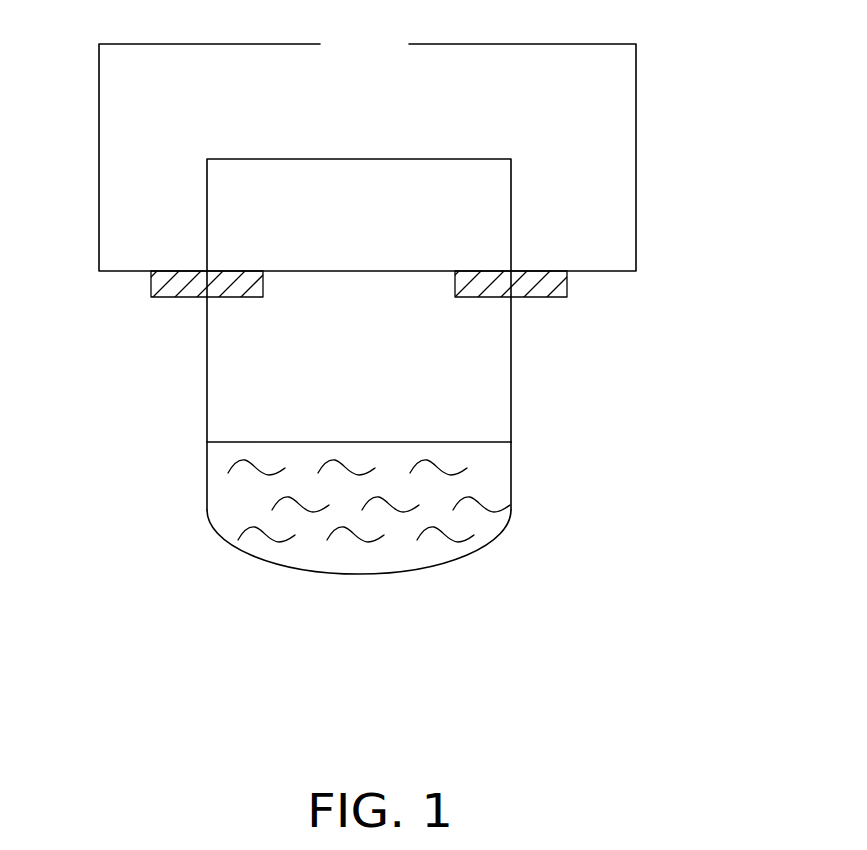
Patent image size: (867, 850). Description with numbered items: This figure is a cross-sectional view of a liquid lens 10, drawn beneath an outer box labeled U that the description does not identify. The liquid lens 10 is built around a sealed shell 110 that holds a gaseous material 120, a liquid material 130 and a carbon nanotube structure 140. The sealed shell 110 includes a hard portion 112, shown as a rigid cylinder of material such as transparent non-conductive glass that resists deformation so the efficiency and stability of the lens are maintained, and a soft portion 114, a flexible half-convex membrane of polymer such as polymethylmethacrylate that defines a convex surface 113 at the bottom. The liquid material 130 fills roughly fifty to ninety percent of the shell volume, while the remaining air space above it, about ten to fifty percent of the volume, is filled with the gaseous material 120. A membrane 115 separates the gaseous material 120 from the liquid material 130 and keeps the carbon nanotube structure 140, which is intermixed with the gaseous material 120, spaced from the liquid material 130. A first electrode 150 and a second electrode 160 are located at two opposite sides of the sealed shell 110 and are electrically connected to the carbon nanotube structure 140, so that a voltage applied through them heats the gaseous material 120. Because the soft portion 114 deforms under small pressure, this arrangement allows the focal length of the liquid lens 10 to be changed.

The ultrasonic unit housing U is at (371, 32).
The liquid lens 10 is at (287, 147).
The sealed shell 110 is at (656, 405).
The hard portion 112 is at (513, 403).
The convex surface 113 is at (337, 575).
The soft portion 114 is at (513, 495).
The membrane 115 is at (272, 441).
The gaseous material 120 is at (253, 380).
The liquid material 130 is at (235, 503).
The carbon nanotube structure 140 is at (396, 271).
The first electrode 150 is at (175, 285).
The second electrode 160 is at (545, 297).